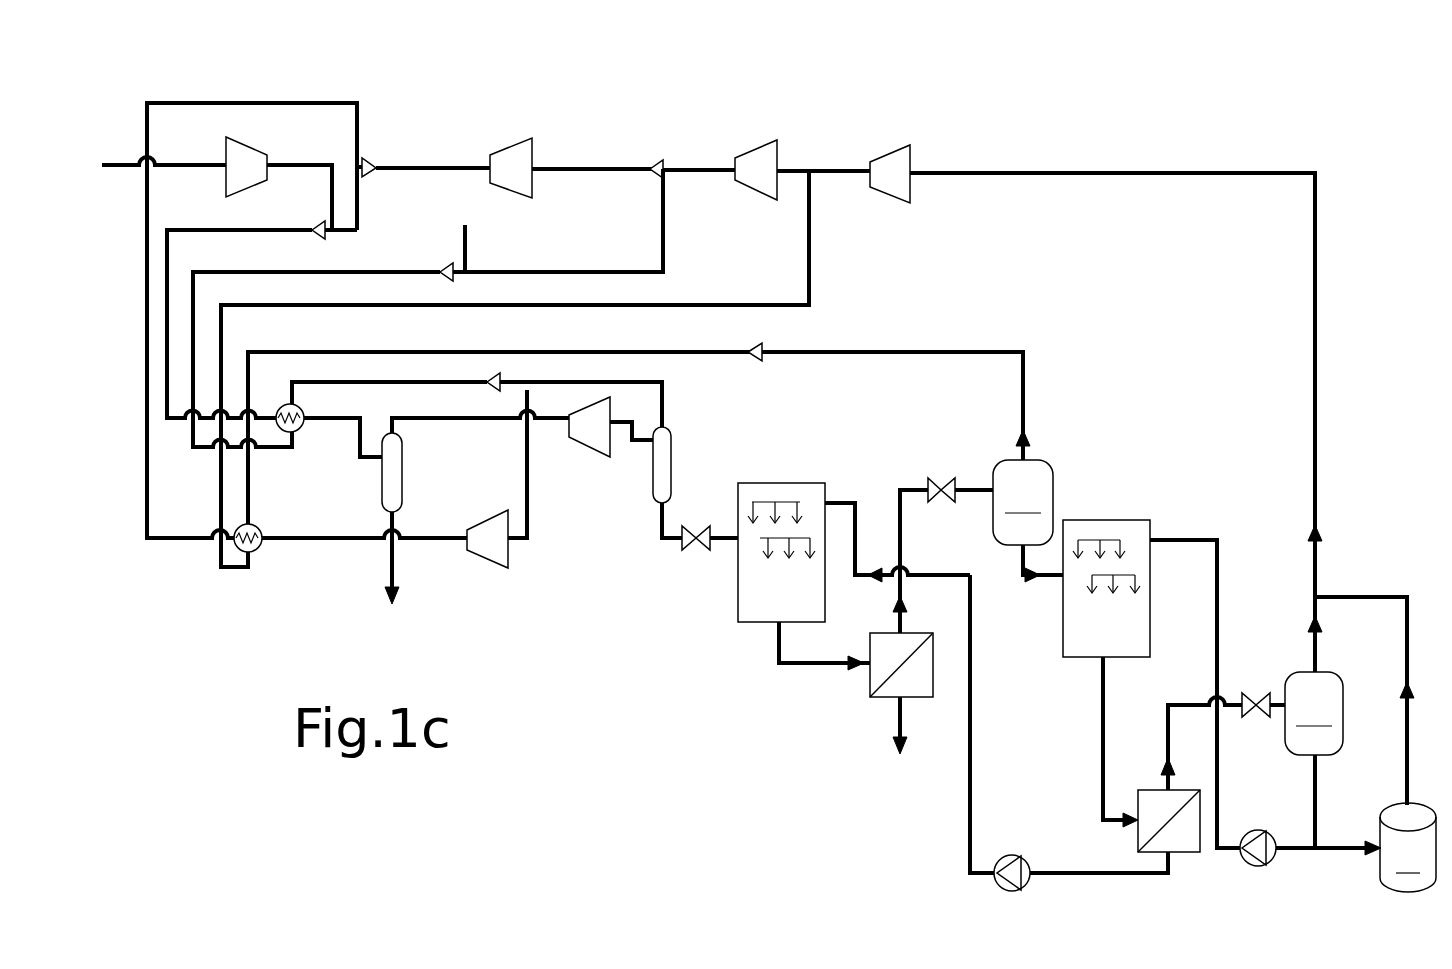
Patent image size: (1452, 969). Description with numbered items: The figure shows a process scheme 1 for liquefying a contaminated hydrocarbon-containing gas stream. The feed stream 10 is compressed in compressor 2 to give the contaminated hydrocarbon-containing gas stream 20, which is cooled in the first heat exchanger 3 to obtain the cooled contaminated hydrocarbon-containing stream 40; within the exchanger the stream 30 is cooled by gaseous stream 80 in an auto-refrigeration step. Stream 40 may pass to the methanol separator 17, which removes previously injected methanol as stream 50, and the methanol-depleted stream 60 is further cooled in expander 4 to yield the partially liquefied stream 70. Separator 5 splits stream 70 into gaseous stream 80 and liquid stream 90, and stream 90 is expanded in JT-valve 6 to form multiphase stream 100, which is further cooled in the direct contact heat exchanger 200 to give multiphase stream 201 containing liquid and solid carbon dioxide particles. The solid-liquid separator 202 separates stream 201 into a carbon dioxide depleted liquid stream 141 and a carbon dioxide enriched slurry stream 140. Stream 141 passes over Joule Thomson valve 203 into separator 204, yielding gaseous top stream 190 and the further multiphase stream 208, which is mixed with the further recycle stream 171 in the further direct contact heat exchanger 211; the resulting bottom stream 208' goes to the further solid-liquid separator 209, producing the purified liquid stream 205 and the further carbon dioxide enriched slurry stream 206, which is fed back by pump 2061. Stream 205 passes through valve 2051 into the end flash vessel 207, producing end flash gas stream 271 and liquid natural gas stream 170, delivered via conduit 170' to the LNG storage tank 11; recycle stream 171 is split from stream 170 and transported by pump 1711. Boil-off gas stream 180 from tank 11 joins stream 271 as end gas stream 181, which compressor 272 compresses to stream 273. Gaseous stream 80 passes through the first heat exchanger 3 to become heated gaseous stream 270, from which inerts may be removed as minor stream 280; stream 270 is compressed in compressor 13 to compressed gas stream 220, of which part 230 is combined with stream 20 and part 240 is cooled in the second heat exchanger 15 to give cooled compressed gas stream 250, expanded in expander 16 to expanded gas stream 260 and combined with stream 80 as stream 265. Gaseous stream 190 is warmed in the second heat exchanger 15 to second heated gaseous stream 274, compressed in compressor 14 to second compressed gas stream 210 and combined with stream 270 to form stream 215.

The process scheme 1 is at (208, 93).
The compressor 2 is at (240, 160).
The first heat exchanger 3 is at (284, 405).
The expander 4 is at (593, 427).
The first separator 5 is at (664, 458).
The JT-valve 6 is at (693, 553).
The feed stream 10 is at (122, 163).
The LNG storage tank 11 is at (1408, 847).
The compressor 13 is at (510, 155).
The compressor 14 is at (753, 160).
The second heat exchanger 15 is at (250, 553).
The expander 16 is at (498, 551).
The methanol separator 17 is at (394, 473).
The contaminated hydrocarbon-containing gas stream 20 is at (278, 164).
The stream 30 is at (218, 228).
The cooled contaminated hydrocarbon-containing stream 40 is at (315, 418).
The methanol stream 50 is at (396, 557).
The methanol-depleted cooled contaminated hydrocarbon-containing gas stream 60 is at (472, 424).
The partially liquefied stream 70 is at (636, 445).
The gaseous stream 80 is at (664, 405).
The liquid stream 90 is at (660, 513).
The multiphase stream 100 is at (730, 530).
The CO2 enriched slurry stream 140 is at (897, 721).
The CO2 depleted liquid stream 141 is at (915, 490).
The liquid natural gas stream 170 is at (1348, 801).
The liquid line to storage tank 170' is at (1348, 869).
The further recycle stream 171 is at (1300, 853).
The boil-off gas stream 180 is at (1348, 596).
The end gas stream 181 is at (1312, 456).
The gaseous stream 190 is at (555, 352).
The direct contact heat exchanger 200 is at (772, 482).
The multiphase stream 201 is at (774, 650).
The solid-liquid separator 202 is at (868, 648).
The Joule Thomson valve 203 is at (948, 495).
The separator 204 is at (1023, 502).
The purified liquid stream 205 is at (1192, 702).
The further CO2 enriched slurry stream 206 is at (1055, 877).
The end flash vessel 207 is at (1314, 713).
The further multiphase stream 208 is at (1008, 563).
The second scrubber bottom line 208' is at (1078, 742).
The further solid-liquid separator 209 is at (1150, 788).
The second compressed gas stream 210 is at (682, 165).
The further direct contact heat exchanger 211 is at (1097, 519).
The combined gas stream 215 is at (568, 167).
The compressed gas stream 220 is at (425, 165).
The part of compressed gas stream 230 is at (358, 217).
The part of compressed gas stream 240 is at (244, 103).
The cooled compressed gas stream 250 is at (284, 541).
The expanded gas stream 260 is at (530, 457).
The combined gaseous stream 265 is at (363, 381).
The heated gaseous stream 270 is at (363, 269).
The end flash gas stream 271 is at (1318, 648).
The compressor 272 is at (888, 165).
The compressed end flash gas stream 273 is at (812, 167).
The second heated gaseous stream 274 is at (810, 263).
The inerts stream 280 is at (468, 250).
The pump 1711 is at (1252, 870).
The valve 2051 is at (1258, 720).
The pump 2061 is at (1012, 854).